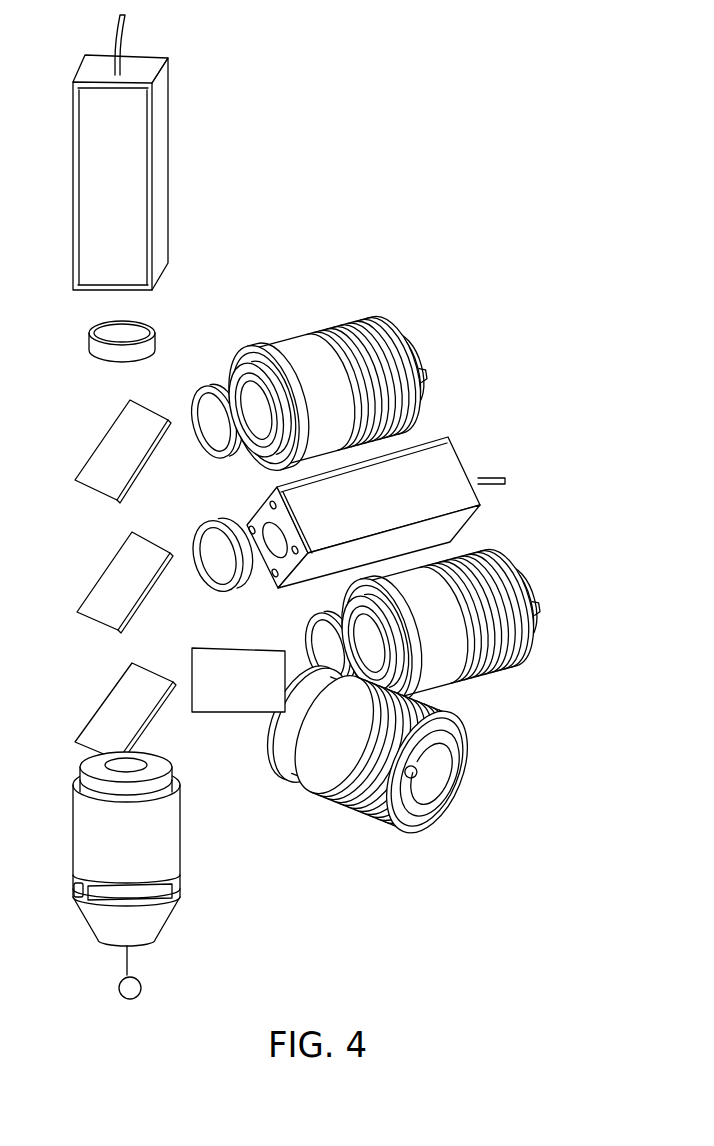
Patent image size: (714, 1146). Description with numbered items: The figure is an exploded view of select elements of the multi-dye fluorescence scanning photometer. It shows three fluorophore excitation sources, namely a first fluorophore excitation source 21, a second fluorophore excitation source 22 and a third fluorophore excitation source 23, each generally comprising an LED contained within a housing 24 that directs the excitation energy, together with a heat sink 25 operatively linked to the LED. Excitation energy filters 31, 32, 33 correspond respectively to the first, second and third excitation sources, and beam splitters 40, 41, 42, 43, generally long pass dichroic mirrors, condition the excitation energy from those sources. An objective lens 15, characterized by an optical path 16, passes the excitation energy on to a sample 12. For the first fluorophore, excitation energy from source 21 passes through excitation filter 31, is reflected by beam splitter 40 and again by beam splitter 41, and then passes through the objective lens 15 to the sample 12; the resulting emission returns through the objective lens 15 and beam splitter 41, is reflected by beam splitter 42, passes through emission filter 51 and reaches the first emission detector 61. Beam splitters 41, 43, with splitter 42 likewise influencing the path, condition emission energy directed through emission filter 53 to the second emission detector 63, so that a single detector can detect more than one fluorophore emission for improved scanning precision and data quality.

The sample 12 is at (127, 990).
The objective lens 15 is at (102, 845).
The optical path 16 is at (127, 950).
The first fluorophore excitation source 21 is at (412, 735).
The second fluorophore excitation source 22 is at (492, 607).
The third fluorophore excitation source 23 is at (362, 355).
The housing 24 is at (330, 402).
The heat sink 25 is at (420, 360).
The excitation energy filter 31 is at (283, 722).
The excitation energy filter 32 is at (353, 650).
The excitation energy filter 33 is at (223, 398).
The beam splitter 40 is at (238, 695).
The beam splitter 41 is at (117, 715).
The beam splitter 42 is at (113, 585).
The beam splitter 43 is at (108, 450).
The emission filter 51 is at (228, 533).
The emission filter 53 is at (125, 352).
The first emission detector 61 is at (425, 488).
The second emission detector 63 is at (120, 200).